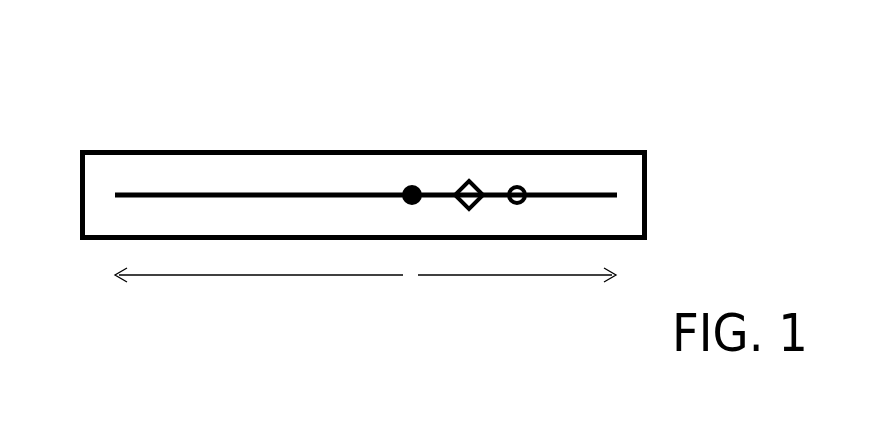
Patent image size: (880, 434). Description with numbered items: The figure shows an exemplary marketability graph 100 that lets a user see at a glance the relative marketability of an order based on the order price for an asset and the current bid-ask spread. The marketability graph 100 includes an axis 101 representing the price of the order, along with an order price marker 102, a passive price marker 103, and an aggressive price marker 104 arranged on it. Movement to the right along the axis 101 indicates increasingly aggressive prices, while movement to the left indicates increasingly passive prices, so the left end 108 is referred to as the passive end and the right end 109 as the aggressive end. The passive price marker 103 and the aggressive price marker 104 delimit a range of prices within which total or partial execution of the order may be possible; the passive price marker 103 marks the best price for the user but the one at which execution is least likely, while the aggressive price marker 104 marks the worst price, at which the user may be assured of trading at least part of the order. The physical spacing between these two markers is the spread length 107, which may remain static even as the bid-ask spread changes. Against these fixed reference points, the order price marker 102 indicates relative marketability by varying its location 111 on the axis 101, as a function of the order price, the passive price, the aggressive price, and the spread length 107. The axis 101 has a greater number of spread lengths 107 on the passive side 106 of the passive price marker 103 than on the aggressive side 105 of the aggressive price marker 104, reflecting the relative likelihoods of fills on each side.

The marketability graph 100 is at (690, 183).
The axis 101 is at (285, 188).
The order price marker 102 is at (460, 207).
The passive price marker 103 is at (388, 182).
The aggressive price marker 104 is at (535, 187).
The aggressive side 105 is at (529, 275).
The passive side 106 is at (248, 275).
The spread length 107 is at (525, 152).
The left end 108 is at (107, 197).
The right end 109 is at (623, 193).
The location 111 is at (468, 150).